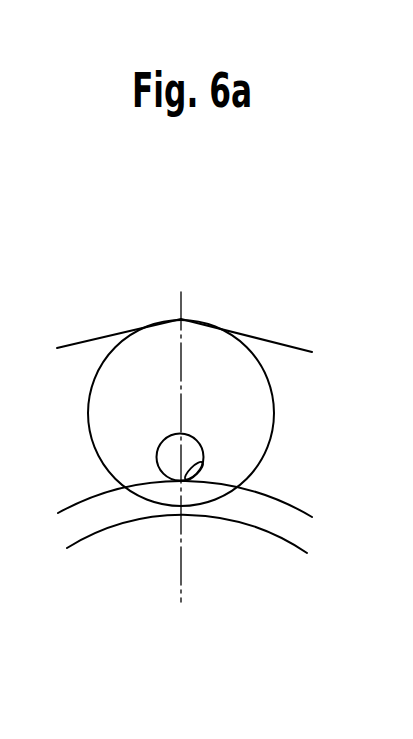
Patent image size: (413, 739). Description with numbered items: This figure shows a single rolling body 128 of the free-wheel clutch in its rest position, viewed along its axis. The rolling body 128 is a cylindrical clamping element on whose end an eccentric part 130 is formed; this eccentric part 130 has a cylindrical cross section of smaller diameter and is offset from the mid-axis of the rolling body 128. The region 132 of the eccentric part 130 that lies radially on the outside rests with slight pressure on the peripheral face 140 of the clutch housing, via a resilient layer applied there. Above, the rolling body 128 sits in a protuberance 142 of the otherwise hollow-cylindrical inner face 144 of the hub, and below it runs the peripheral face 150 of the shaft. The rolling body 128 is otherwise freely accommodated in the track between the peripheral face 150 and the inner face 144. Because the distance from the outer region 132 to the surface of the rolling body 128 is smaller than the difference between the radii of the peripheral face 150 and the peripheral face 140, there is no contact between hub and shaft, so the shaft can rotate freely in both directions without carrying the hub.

The rolling body 128 is at (272, 388).
The eccentric part 130 is at (192, 450).
The outer region of the eccentric part 132 is at (201, 466).
The peripheral face 140 is at (290, 506).
The protuberance 142 is at (189, 319).
The inner face 144 is at (290, 344).
The peripheral face 150 is at (296, 548).